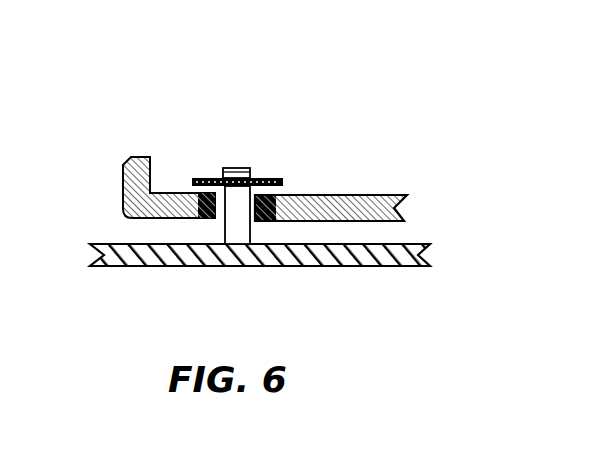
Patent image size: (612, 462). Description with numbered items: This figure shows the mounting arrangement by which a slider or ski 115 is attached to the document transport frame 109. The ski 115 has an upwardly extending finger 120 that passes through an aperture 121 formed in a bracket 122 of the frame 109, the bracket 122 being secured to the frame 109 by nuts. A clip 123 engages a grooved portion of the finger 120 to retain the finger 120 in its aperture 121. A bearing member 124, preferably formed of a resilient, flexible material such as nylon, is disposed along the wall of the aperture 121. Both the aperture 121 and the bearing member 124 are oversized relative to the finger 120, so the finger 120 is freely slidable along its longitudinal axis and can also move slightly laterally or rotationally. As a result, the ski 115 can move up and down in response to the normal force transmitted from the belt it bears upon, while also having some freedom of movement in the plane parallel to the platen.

The transport frame 109 is at (445, 104).
The ski 115 is at (307, 258).
The finger 120 is at (238, 168).
The aperture 121 is at (251, 203).
The bracket 122 is at (370, 195).
The clip 123 is at (262, 178).
The bearing member 124 is at (202, 182).